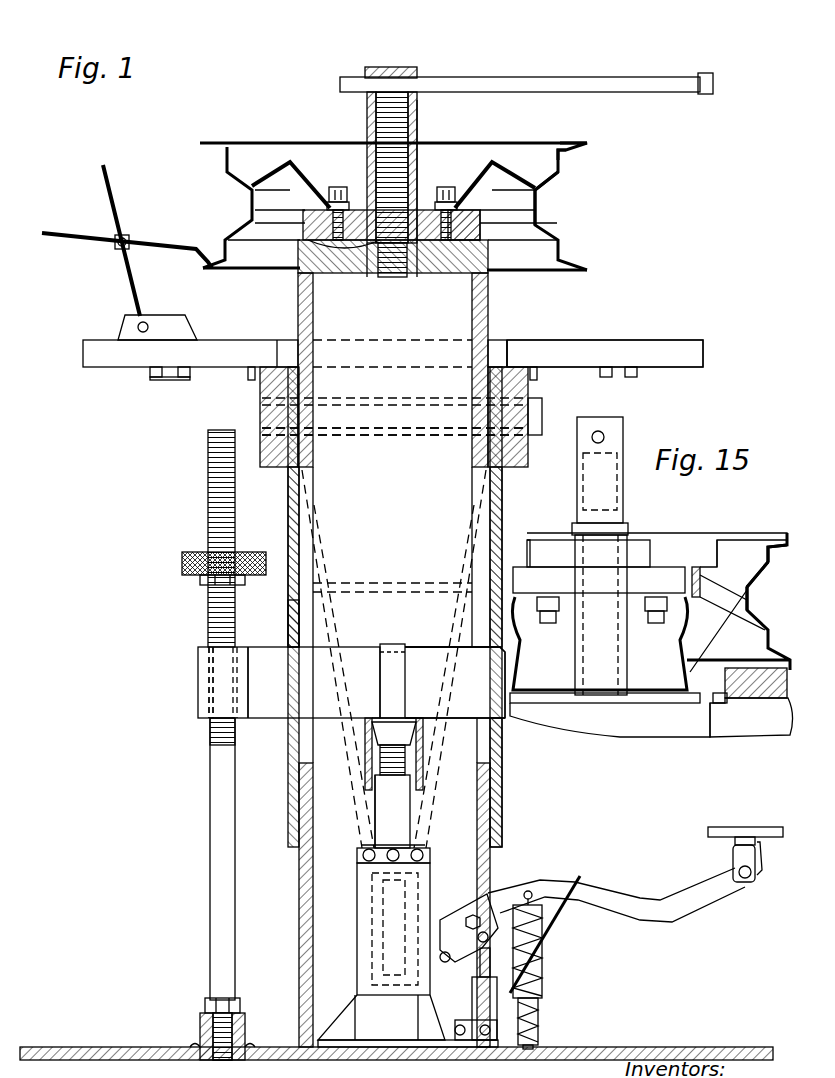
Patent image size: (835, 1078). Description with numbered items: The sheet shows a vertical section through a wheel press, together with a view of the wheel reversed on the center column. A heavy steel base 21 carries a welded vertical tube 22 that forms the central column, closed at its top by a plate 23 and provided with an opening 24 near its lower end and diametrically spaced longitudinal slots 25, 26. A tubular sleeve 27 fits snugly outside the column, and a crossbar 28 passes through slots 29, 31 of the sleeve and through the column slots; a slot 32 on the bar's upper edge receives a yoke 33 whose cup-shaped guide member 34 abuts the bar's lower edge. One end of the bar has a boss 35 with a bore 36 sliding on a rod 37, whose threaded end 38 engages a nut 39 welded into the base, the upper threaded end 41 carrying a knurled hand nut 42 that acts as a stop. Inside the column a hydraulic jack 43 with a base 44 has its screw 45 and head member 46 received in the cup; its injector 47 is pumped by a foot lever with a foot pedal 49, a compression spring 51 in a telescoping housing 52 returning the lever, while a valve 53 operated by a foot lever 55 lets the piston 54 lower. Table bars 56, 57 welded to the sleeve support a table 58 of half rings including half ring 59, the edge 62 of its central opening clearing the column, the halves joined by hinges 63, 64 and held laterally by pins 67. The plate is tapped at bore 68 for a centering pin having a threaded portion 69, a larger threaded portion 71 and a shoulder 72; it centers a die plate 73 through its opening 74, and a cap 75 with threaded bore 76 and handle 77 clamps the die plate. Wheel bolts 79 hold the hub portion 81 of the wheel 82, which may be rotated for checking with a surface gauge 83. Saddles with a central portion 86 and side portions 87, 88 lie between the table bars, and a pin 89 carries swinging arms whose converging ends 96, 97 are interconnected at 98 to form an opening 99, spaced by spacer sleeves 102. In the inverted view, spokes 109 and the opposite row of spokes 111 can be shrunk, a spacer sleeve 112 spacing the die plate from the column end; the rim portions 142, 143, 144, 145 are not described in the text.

In FIG. 1, the base 21 is at (284, 1047).
In FIG. 1, the tube 22 is at (492, 806).
In FIG. 15, the tube 22 is at (645, 704).
In FIG. 1, the plate 23 is at (450, 265).
In FIG. 1, the opening 24 is at (492, 896).
In FIG. 1, the slot 25 is at (482, 494).
In FIG. 1, the slot 26 is at (292, 622).
In FIG. 1, the tubular sleeve 27 is at (500, 740).
In FIG. 15, the tubular sleeve 27 is at (505, 738).
In FIG. 1, the crossbar 28 is at (455, 703).
In FIG. 1, the slot 29 is at (452, 665).
In FIG. 1, the slot 31 is at (290, 650).
In FIG. 1, the slot 32 is at (408, 648).
In FIG. 1, the yoke 33 is at (380, 645).
In FIG. 1, the cup-shaped guide member 34 is at (408, 740).
In FIG. 1, the boss 35 is at (200, 652).
In FIG. 1, the bore 36 is at (206, 700).
In FIG. 1, the rod 37 is at (220, 768).
In FIG. 1, the threaded end 38 is at (206, 1004).
In FIG. 1, the nut 39 is at (200, 1028).
In FIG. 1, the threaded upper end 41 is at (208, 518).
In FIG. 1, the knurled hand nut 42 is at (183, 565).
In FIG. 1, the hydraulic jack 43 is at (372, 902).
In FIG. 1, the jack base 44 is at (397, 1044).
In FIG. 1, the screw 45 is at (375, 775).
In FIG. 1, the head member 46 is at (372, 750).
In FIG. 1, the injector 47 is at (480, 1000).
In FIG. 1, the foot pedal 49 is at (744, 828).
In FIG. 1, the compression spring 51 is at (545, 962).
In FIG. 1, the telescoping housing 52 is at (540, 1010).
In FIG. 1, the valve 53 is at (540, 1024).
In FIG. 1, the piston 54 is at (360, 840).
In FIG. 1, the foot lever 55 is at (580, 876).
In FIG. 1, the table bar 56 is at (270, 468).
In FIG. 15, the table bar 56 is at (756, 699).
In FIG. 1, the table bar 57 is at (522, 462).
In FIG. 1, the table 58 is at (648, 333).
In FIG. 1, the half ring 59 is at (704, 352).
In FIG. 15, the half ring 59 is at (770, 700).
In FIG. 1, the edge of opening 62 is at (505, 352).
In FIG. 15, the edge of opening 62 is at (720, 704).
In FIG. 1, the hinge 63 is at (158, 380).
In FIG. 1, the hinge 64 is at (628, 380).
In FIG. 1, the pins 67 is at (248, 374).
In FIG. 1, the bore 68 is at (368, 280).
In FIG. 1, the threaded portion 69 is at (388, 280).
In FIG. 1, the larger threaded portion 71 is at (420, 152).
In FIG. 15, the larger threaded portion 71 is at (582, 672).
In FIG. 1, the shoulder 72 is at (380, 258).
In FIG. 1, the die plate 73 is at (312, 222).
In FIG. 15, the die plate 73 is at (599, 580).
In FIG. 1, the opening 74 is at (300, 252).
In FIG. 1, the cap 75 is at (366, 138).
In FIG. 15, the cap 75 is at (614, 440).
In FIG. 1, the central threaded bore 76 is at (390, 116).
In FIG. 1, the handle 77 is at (572, 86).
In FIG. 1, the wheel bolts 79 is at (452, 186).
In FIG. 15, the wheel bolts 79 is at (656, 624).
In FIG. 1, the hub portion 81 is at (476, 222).
In FIG. 15, the hub portion 81 is at (680, 570).
In FIG. 1, the wheel 82 is at (248, 133).
In FIG. 1, the surface gauge 83 is at (113, 259).
In FIG. 1, the central portion 86 is at (375, 582).
In FIG. 1, the side portion 87 is at (290, 540).
In FIG. 1, the side portion 88 is at (600, 898).
In FIG. 1, the pin 89 is at (402, 430).
In FIG. 1, the converging end 96 is at (428, 794).
In FIG. 1, the converging end 97 is at (378, 812).
In FIG. 1, the interconnection 98 is at (368, 872).
In FIG. 1, the rectangular opening 99 is at (388, 938).
In FIG. 1, the spacer sleeves 102 is at (352, 437).
In FIG. 15, the spokes 109 is at (708, 640).
In FIG. 15, the row of spokes 111 is at (700, 566).
In FIG. 15, the spacer sleeve 112 is at (628, 654).
In FIG. 1, the rim well 142 is at (542, 210).
In FIG. 15, the rim well 142 is at (748, 602).
In FIG. 1, the rim shoulder 143 is at (560, 170).
In FIG. 15, the rim shoulder 143 is at (752, 560).
In FIG. 1, the rim flange 144 is at (590, 145).
In FIG. 15, the rim flange 144 is at (785, 533).
In FIG. 1, the rim bead seat 145 is at (570, 152).
In FIG. 15, the rim bead seat 145 is at (770, 575).